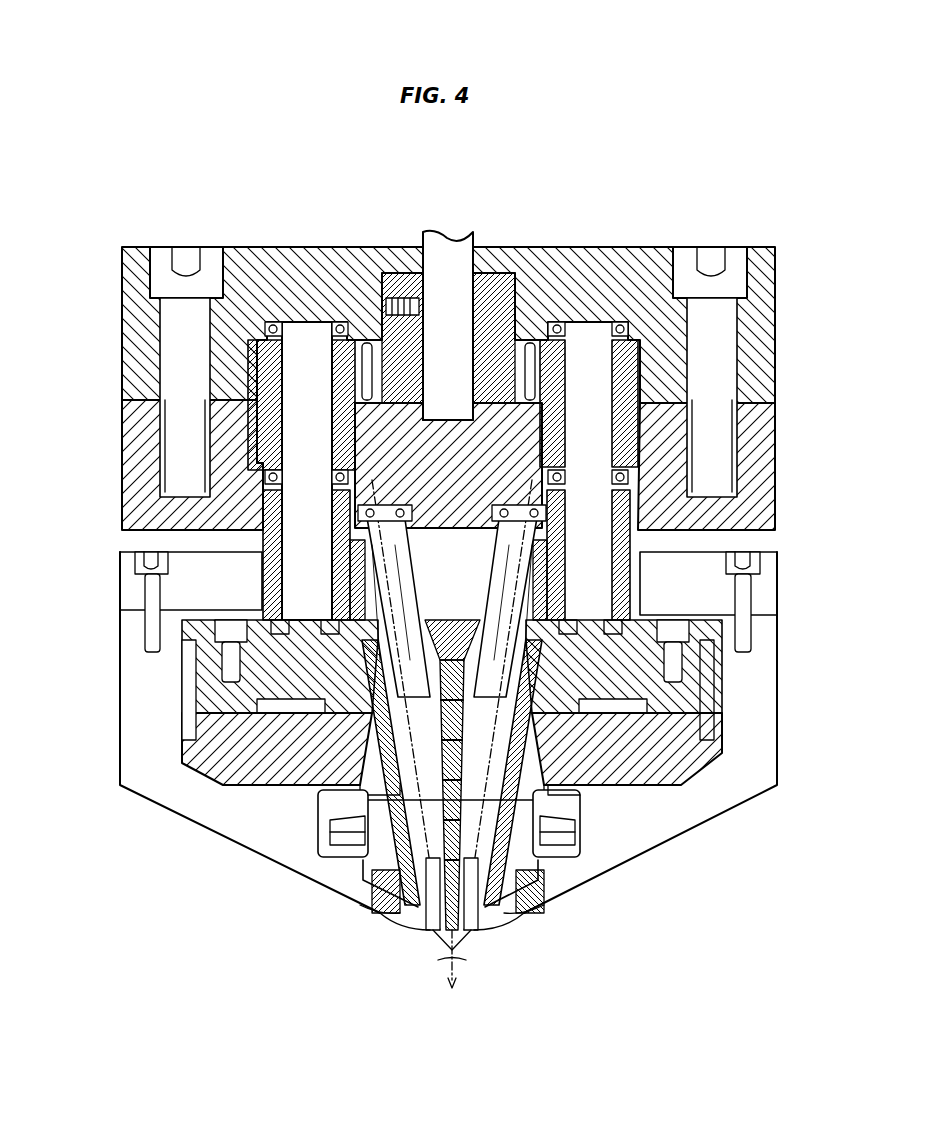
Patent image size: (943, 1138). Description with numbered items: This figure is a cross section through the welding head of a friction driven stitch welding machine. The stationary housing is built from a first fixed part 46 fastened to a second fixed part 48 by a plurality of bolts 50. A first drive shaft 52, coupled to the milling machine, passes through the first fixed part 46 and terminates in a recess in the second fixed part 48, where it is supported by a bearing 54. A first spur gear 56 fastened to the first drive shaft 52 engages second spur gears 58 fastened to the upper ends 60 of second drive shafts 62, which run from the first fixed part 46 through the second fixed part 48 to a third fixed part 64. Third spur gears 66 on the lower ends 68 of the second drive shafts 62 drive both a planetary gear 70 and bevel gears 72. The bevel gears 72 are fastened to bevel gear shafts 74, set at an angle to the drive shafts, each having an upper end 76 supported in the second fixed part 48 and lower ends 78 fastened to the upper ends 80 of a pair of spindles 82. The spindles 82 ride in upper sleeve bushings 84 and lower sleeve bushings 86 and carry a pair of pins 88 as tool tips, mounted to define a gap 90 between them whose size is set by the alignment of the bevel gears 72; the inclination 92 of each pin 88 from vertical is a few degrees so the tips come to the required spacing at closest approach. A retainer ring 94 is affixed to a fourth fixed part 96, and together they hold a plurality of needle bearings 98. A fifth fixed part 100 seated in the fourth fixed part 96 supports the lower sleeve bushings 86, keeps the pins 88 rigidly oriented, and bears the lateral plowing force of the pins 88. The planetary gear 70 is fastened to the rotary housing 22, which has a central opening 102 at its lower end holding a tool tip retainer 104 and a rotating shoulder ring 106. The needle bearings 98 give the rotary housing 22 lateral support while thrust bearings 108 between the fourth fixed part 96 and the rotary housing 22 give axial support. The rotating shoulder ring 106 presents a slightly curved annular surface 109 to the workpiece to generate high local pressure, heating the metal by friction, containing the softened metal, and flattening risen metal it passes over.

The rotary housing 22 is at (258, 855).
The first fixed part 46 is at (122, 290).
The second fixed part 48 is at (122, 402).
The bolts 50 is at (160, 340).
The first drive shaft 52 is at (425, 240).
The bearing 54 is at (515, 340).
The first spur gear 56 is at (245, 337).
The second spur gears 58 is at (250, 420).
The upper ends 60 is at (322, 322).
The second drive shafts 62 is at (288, 332).
The third fixed part 64 is at (645, 700).
The third spur gears 66 is at (262, 542).
The lower ends 68 is at (148, 600).
The planetary gear 70 is at (120, 578).
The bevel gears 72 is at (333, 640).
The bevel gear shafts 74 is at (257, 677).
The upper end 76 is at (345, 495).
The lower ends 78 is at (227, 777).
The upper ends 80 is at (257, 683).
The spindles 82 is at (320, 787).
The upper sleeve bushings 84 is at (680, 680).
The lower sleeve bushings 86 is at (570, 790).
The pins 88 is at (430, 925).
The gap 90 is at (445, 932).
The inclination 92 is at (460, 962).
The retainer ring 94 is at (720, 625).
The fourth fixed part 96 is at (690, 735).
The needle bearings 98 is at (710, 738).
The fifth fixed part 100 is at (578, 802).
The central opening 102 is at (485, 920).
The tool tip retainer 104 is at (537, 883).
The rotating shoulder ring 106 is at (520, 908).
The thrust bearings 108 is at (570, 820).
The curved annular surface 109 is at (398, 920).